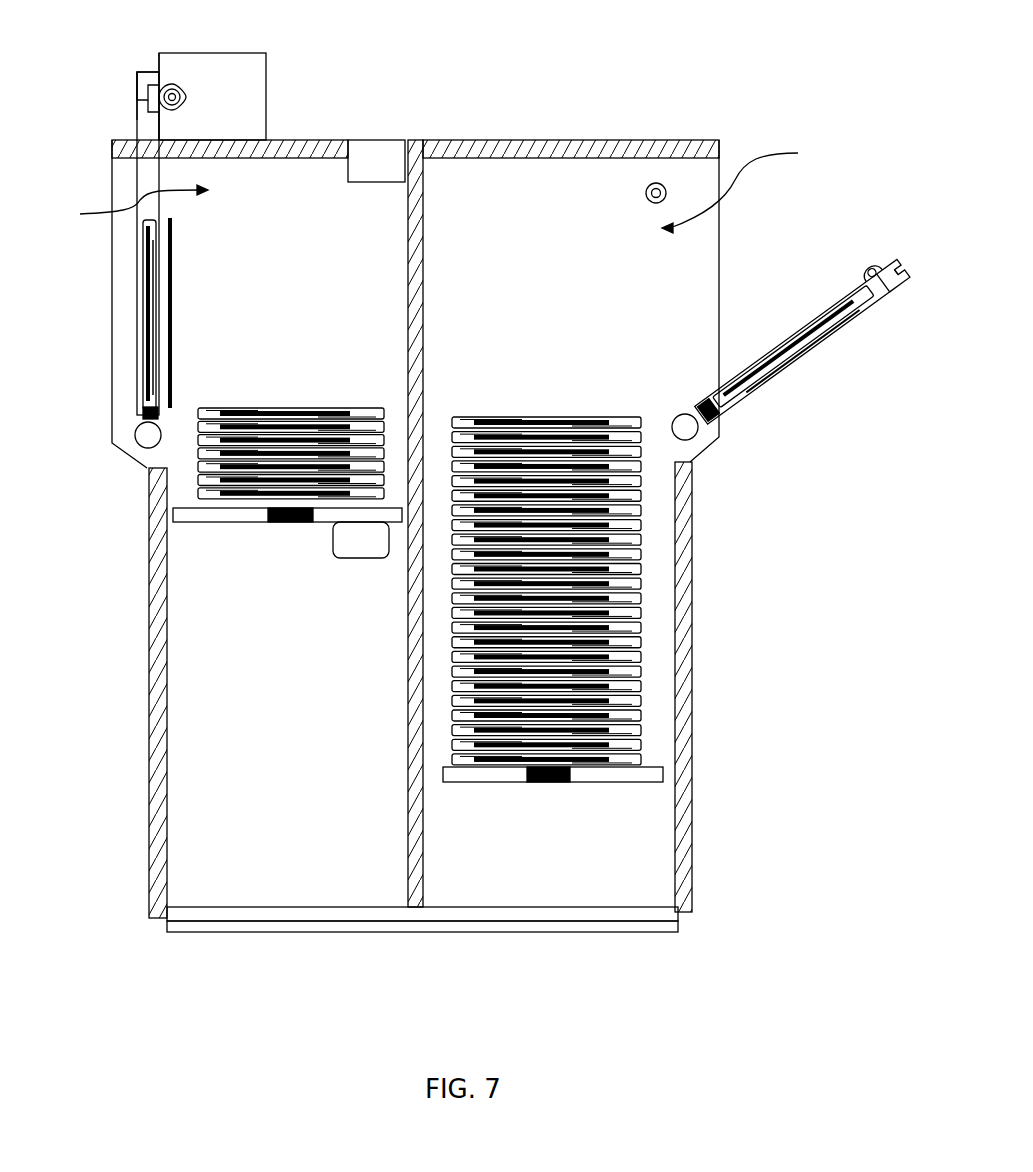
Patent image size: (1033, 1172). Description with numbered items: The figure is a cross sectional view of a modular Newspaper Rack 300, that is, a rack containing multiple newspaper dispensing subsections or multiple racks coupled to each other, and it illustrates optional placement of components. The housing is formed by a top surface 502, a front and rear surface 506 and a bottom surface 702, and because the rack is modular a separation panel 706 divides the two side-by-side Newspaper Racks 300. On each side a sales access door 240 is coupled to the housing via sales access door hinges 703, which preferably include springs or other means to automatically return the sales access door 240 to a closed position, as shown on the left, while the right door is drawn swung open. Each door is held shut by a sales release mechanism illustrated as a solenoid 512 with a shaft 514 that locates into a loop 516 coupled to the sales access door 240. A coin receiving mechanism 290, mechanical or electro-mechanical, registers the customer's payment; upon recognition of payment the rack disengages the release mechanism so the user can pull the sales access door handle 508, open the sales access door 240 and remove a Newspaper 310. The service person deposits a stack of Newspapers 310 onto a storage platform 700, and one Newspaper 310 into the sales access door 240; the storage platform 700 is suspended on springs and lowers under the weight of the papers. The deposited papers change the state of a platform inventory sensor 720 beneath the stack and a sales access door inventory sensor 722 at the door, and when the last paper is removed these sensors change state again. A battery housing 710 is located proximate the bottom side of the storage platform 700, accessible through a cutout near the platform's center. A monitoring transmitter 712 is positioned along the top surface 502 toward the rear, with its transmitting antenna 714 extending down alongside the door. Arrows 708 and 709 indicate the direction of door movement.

The Newspaper Rack 300 is at (818, 934).
The top surface 502 is at (453, 138).
The front and rear surface 506 is at (693, 868).
The sales access door handle 508 is at (139, 103).
The solenoid 512 is at (152, 75).
The shaft 514 is at (176, 95).
The loop 516 is at (855, 275).
The sales access door 240 is at (147, 188).
The coin receiving mechanism 290 is at (252, 65).
The Newspaper 310 is at (147, 300).
The storage platform 700 is at (218, 517).
The bottom surface 702 is at (208, 915).
The sales access door hinges 703 is at (142, 435).
The separation panel 706 is at (420, 175).
The direction arrow 708 is at (124, 209).
The direction arrow 709 is at (750, 187).
The battery housing 710 is at (362, 545).
The monitoring transmitter 712 is at (375, 163).
The transmitting antenna 714 is at (175, 325).
The platform inventory sensor 720 is at (287, 523).
The sales access door inventory sensor 722 is at (143, 414).